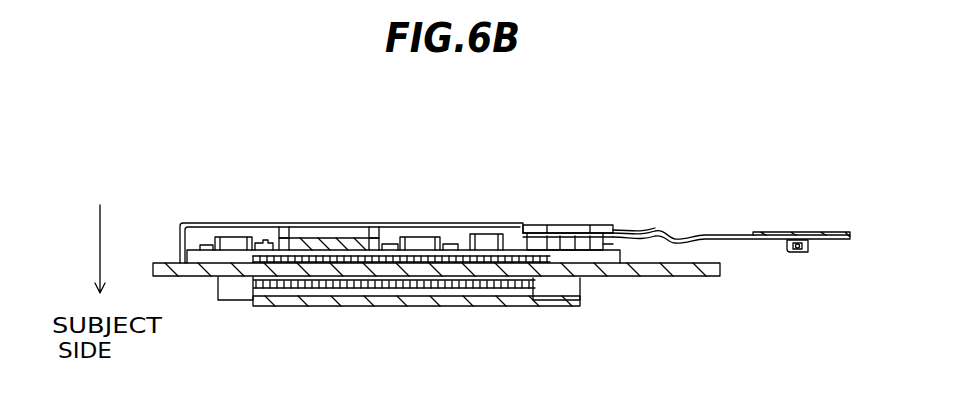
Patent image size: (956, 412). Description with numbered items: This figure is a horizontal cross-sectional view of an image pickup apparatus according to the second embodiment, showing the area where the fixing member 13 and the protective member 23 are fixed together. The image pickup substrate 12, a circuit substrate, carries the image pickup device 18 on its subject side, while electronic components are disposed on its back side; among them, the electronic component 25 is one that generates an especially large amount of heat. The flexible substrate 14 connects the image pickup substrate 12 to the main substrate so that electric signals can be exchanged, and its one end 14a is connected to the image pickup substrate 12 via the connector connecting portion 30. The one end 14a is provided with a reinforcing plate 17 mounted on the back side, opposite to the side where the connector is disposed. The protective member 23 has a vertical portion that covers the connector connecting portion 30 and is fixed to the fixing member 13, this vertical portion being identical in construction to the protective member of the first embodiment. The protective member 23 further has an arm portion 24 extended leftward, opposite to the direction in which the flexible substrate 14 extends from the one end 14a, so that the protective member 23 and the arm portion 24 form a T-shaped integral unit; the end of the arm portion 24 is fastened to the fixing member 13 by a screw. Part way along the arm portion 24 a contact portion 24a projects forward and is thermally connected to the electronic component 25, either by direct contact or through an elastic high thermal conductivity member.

The image pickup substrate 12 is at (230, 255).
The fixing member 13 is at (704, 268).
The flexible substrate 14 is at (675, 233).
The one end of the flexible substrate 14a is at (523, 226).
The reinforcing plate 17 is at (608, 214).
The image pickup device 18 is at (388, 304).
The protective member 23 is at (614, 212).
The arm portion 24 is at (403, 228).
The contact portion 24a is at (333, 252).
The electronic component 25 is at (285, 226).
The connector connecting portion 30 is at (613, 242).